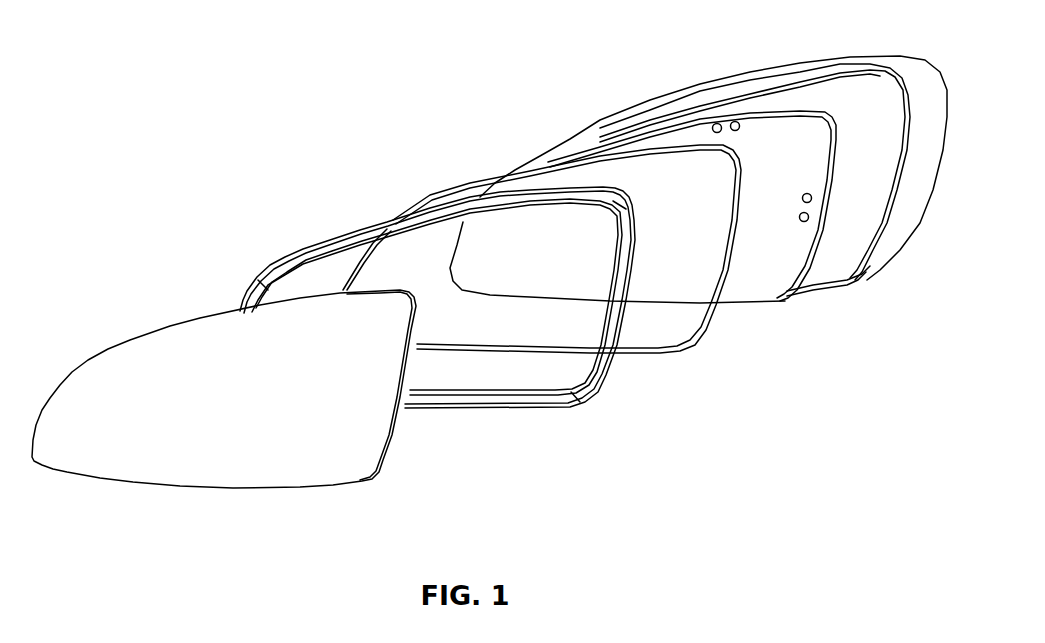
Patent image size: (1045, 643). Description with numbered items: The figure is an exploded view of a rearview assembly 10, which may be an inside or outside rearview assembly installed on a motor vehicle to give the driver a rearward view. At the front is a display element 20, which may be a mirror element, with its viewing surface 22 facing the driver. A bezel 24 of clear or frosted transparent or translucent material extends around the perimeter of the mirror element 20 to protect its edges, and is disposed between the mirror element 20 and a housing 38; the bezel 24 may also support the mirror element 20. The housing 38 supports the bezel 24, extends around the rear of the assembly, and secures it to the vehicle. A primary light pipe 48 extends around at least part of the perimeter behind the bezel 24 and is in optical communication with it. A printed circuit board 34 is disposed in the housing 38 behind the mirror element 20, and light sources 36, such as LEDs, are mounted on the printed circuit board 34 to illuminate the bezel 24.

The rearview assembly 10 is at (222, 114).
The display element 20 is at (115, 343).
The viewing surface 22 is at (190, 450).
The bezel 24 is at (302, 249).
The primary light pipe 48 is at (423, 195).
The printed circuit board 34 is at (623, 133).
The housing 38 is at (803, 61).
The light source 36 is at (715, 122).